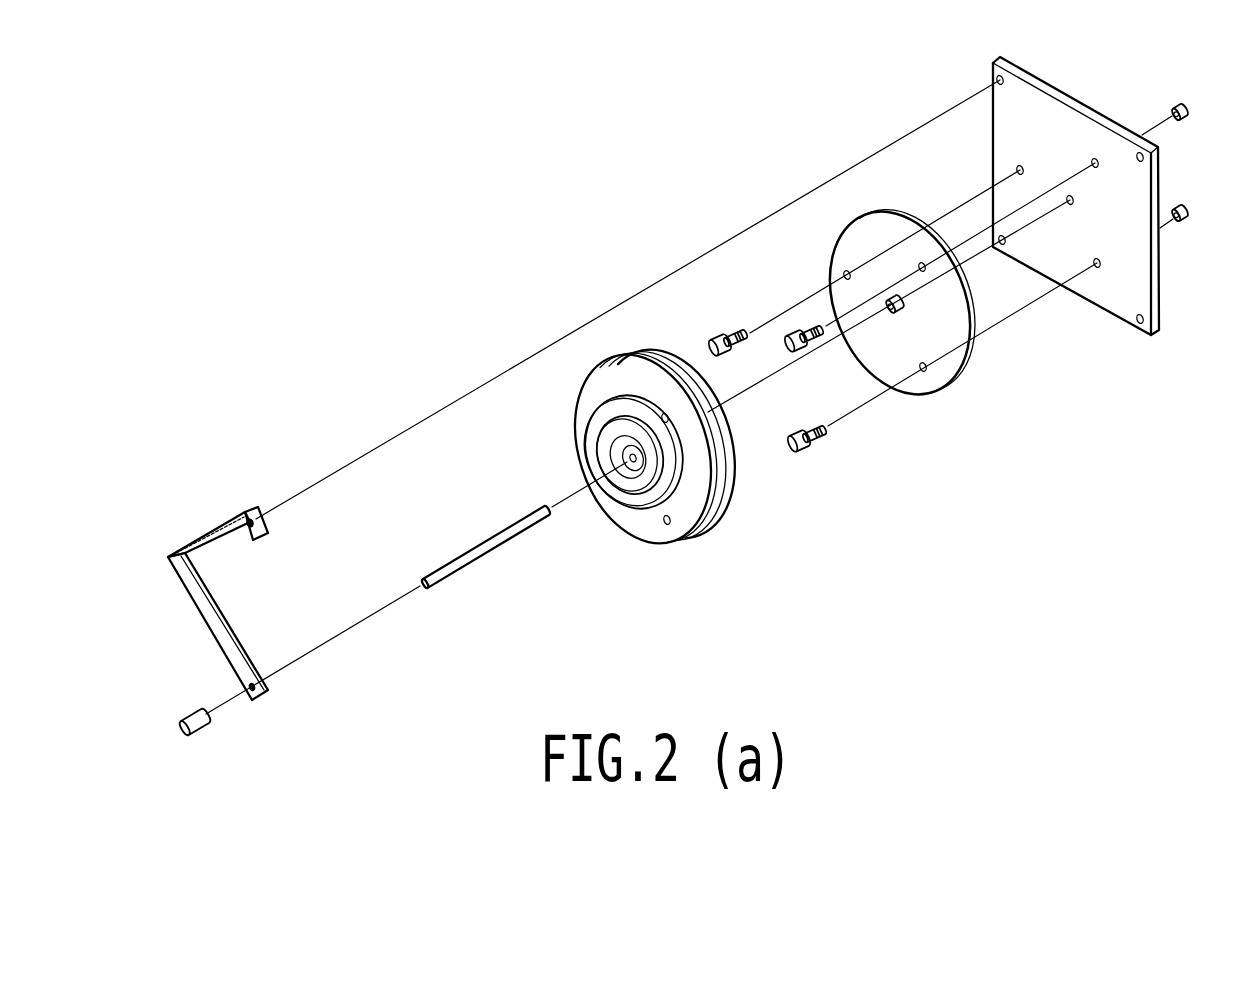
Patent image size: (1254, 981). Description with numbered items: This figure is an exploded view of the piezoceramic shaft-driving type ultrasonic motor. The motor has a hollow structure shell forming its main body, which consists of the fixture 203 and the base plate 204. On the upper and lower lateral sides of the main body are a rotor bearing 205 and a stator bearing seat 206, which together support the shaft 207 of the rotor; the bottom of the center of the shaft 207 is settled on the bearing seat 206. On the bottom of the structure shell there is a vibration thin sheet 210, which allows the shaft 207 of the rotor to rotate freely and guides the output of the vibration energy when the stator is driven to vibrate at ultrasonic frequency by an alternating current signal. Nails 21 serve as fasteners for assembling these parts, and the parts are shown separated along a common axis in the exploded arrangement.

The nail 21 is at (733, 333).
The fixture 203 is at (197, 597).
The base plate 204 is at (1135, 280).
The bearing 205 is at (207, 720).
The bearing seat 206 is at (902, 312).
The shaft 207 is at (478, 552).
The vibration thin sheet 210 is at (867, 212).